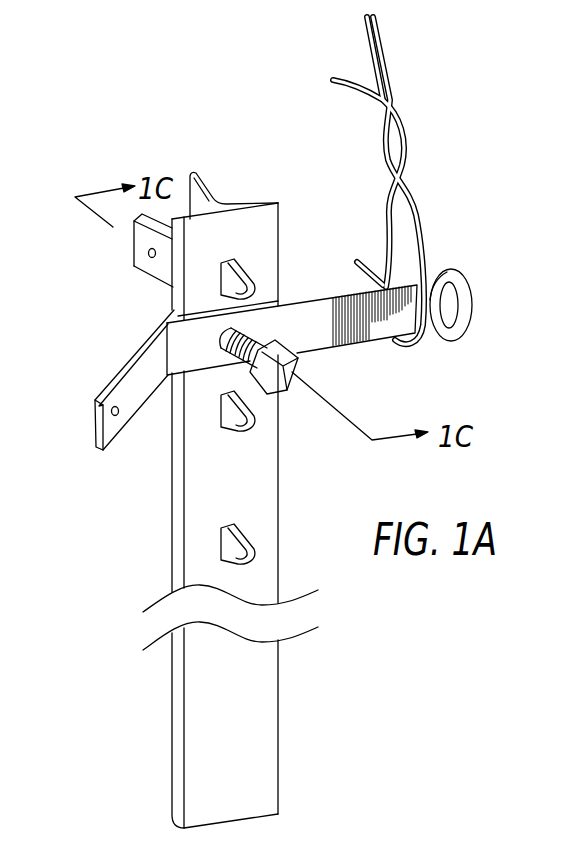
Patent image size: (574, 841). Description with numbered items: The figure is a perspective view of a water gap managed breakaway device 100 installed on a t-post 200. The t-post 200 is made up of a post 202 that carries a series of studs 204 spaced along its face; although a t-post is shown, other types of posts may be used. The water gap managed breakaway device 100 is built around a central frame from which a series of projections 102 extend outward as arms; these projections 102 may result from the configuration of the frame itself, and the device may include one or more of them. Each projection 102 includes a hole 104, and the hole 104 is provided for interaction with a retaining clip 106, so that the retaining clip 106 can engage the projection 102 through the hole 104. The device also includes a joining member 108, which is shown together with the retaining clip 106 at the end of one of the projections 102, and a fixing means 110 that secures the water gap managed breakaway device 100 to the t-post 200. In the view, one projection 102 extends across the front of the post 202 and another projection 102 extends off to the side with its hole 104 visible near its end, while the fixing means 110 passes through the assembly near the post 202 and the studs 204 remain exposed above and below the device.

The water gap managed breakaway device 100 is at (472, 244).
The projection 102 is at (138, 390).
The hole 104 is at (113, 406).
The retaining clip 106 is at (472, 305).
The joining member 108 is at (412, 218).
The fixing means 110 is at (278, 380).
The t-post 200 is at (159, 138).
The post 202 is at (276, 222).
The stud 204 is at (248, 283).